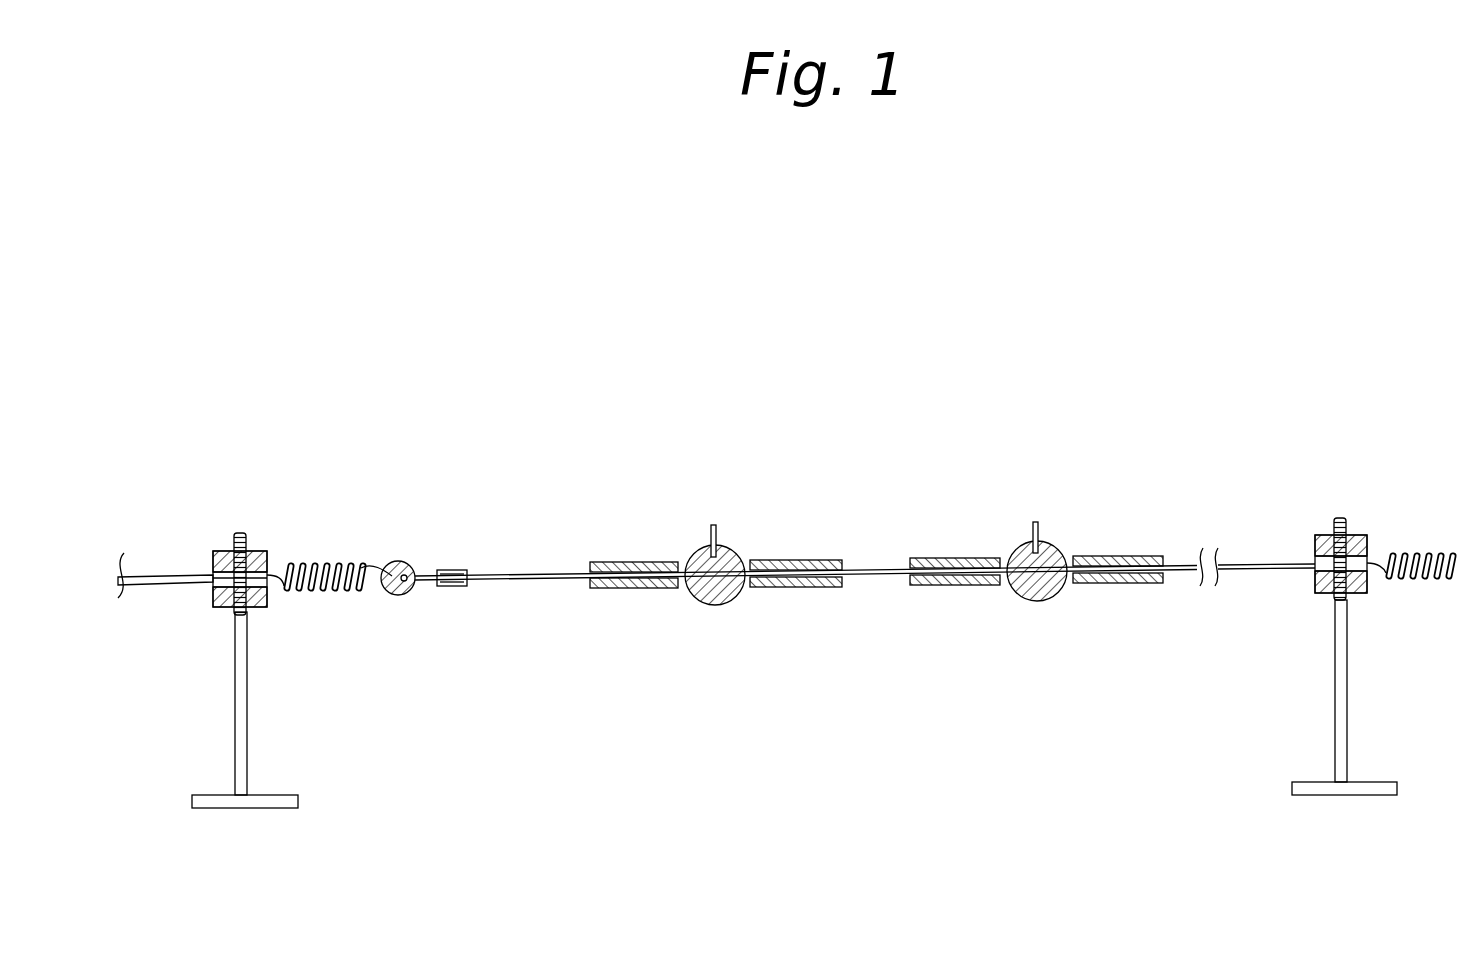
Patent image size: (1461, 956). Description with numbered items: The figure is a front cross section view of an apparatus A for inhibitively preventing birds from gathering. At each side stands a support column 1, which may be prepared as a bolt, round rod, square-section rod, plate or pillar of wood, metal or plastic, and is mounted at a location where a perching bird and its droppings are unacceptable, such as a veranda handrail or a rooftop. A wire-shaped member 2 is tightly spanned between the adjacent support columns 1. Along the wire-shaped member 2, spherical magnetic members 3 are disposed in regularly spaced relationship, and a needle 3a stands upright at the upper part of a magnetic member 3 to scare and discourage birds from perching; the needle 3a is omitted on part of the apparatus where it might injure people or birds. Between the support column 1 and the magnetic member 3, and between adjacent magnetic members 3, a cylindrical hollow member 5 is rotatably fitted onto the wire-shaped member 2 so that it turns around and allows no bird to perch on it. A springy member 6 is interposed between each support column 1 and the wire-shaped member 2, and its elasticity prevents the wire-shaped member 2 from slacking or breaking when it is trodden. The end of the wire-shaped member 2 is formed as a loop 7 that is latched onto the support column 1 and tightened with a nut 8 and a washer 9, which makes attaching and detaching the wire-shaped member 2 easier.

The support column 1 is at (248, 736).
The wire-shaped member 2 is at (508, 581).
The magnetic member 3 is at (712, 606).
The needle 3a is at (714, 526).
The cylindrical hollow member 5 is at (612, 562).
The springy member 6 is at (345, 561).
The loop 7 is at (270, 556).
The nut 8 is at (221, 551).
The washer 9 is at (196, 556).
The apparatus for inhibitively preventing birds from gathering A is at (1082, 455).